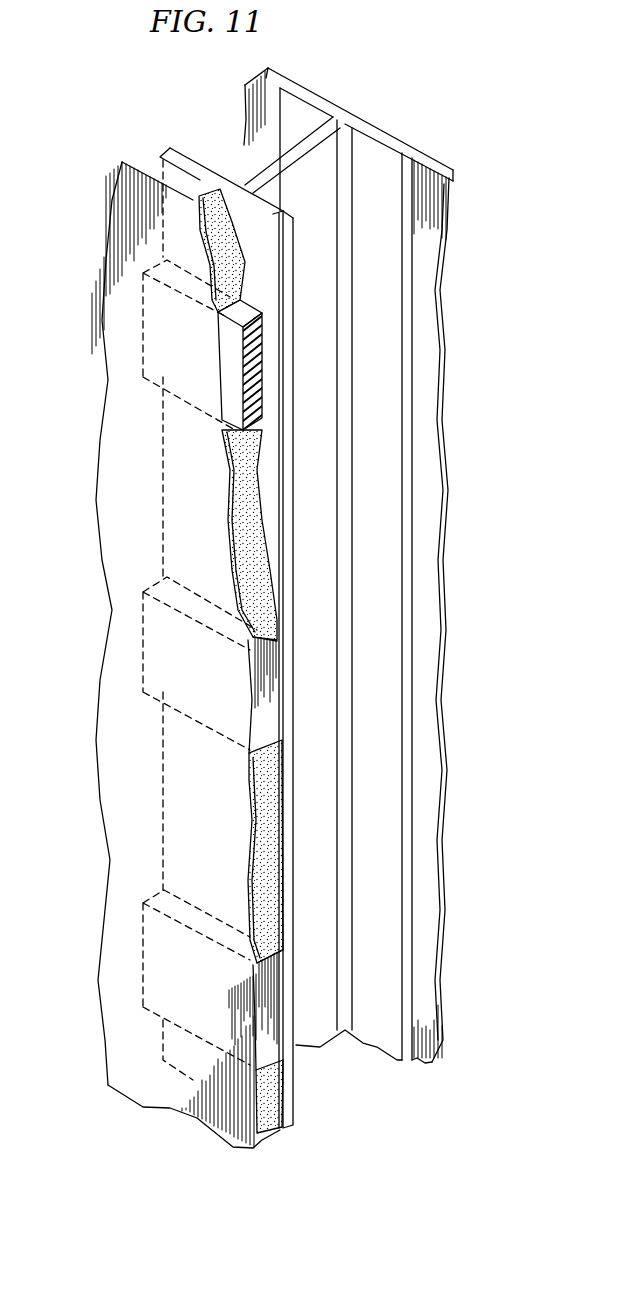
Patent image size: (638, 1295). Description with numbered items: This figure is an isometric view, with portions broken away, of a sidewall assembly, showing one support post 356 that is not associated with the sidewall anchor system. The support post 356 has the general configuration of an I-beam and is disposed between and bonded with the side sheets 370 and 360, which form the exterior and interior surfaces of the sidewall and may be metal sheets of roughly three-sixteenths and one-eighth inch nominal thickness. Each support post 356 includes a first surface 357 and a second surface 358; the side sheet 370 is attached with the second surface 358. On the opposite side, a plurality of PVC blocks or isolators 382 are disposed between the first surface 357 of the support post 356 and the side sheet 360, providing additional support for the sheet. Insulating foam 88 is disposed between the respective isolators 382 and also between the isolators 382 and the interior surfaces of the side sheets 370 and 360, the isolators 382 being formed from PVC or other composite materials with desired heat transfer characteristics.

The support post 356 is at (321, 95).
The first surface 357 is at (266, 233).
The second surface 358 is at (380, 128).
The side sheet 360 is at (100, 447).
The side sheet 370 is at (427, 152).
The insulating foam 88 is at (245, 276).
The isolator 382 is at (262, 382).